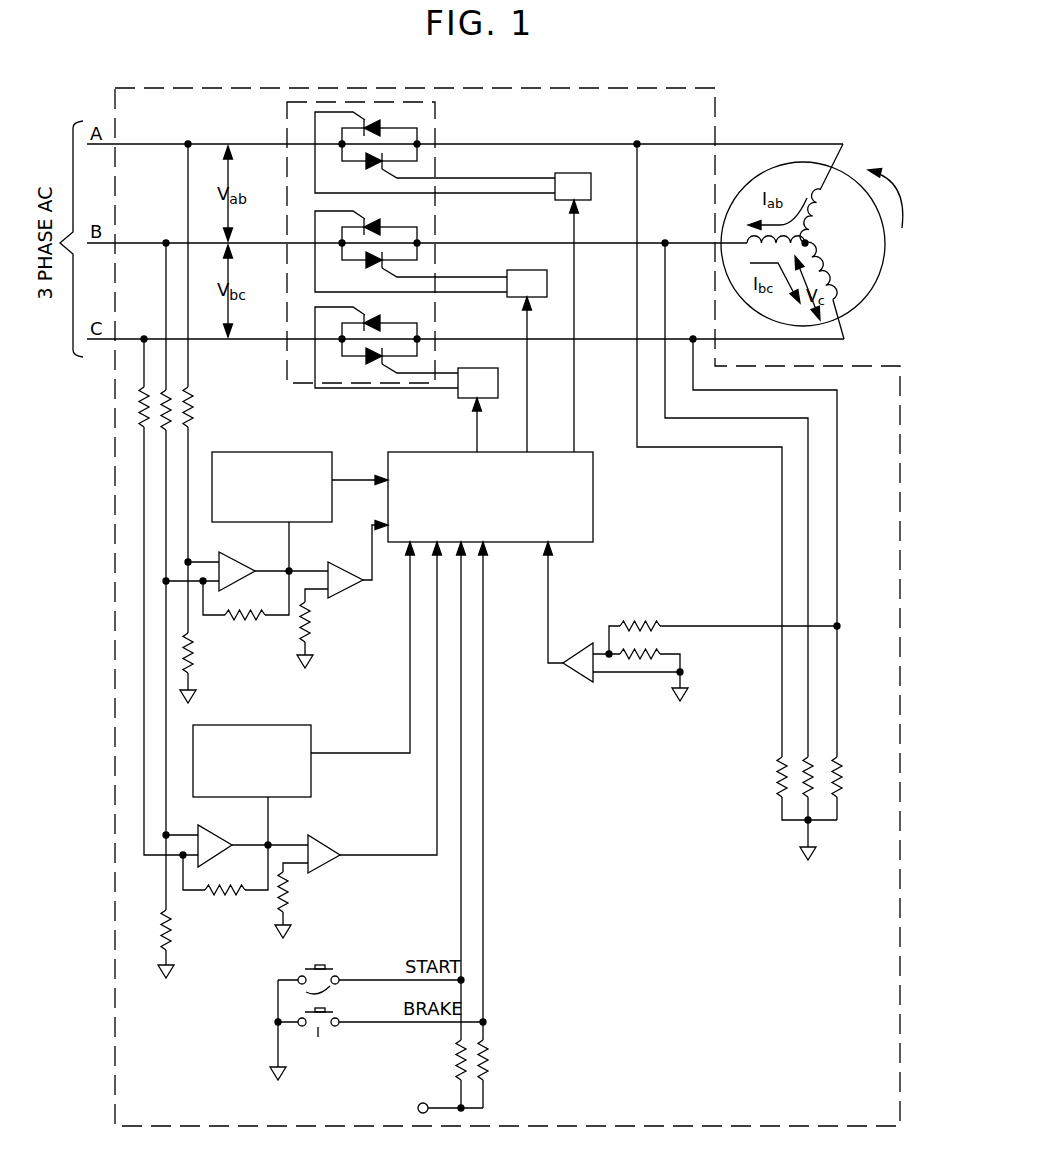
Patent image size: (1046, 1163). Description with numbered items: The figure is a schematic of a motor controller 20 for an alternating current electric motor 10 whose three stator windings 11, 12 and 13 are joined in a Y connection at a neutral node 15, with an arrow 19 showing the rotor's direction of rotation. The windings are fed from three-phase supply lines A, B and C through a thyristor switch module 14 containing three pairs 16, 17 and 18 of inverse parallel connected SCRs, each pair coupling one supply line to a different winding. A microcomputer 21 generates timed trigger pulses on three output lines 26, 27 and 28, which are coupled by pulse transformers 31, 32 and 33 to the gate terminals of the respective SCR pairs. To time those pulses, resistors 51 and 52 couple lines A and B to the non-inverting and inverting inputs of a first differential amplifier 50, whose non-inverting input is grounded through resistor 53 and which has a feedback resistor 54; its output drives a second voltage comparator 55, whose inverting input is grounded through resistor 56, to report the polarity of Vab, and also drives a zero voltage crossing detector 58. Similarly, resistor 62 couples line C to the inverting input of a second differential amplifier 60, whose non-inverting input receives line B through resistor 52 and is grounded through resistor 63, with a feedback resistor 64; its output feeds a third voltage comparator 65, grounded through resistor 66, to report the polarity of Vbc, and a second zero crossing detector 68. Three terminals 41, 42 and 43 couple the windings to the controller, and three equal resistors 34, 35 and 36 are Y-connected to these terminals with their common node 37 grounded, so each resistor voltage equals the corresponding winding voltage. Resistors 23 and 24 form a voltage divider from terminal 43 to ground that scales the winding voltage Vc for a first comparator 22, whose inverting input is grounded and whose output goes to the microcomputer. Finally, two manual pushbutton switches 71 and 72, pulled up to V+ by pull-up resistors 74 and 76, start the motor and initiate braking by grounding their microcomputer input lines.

The alternating current electric motor 10 is at (870, 311).
The motor stator winding 11 is at (818, 186).
The motor stator winding 12 is at (744, 240).
The motor stator winding 13 is at (831, 280).
The thyristor switch module 14 is at (420, 122).
The neutral node 15 is at (822, 235).
The pair of inverse parallel connected SCR's 16 is at (340, 135).
The pair of inverse parallel connected SCR's 17 is at (380, 250).
The pair of inverse parallel connected SCR's 18 is at (355, 347).
The arrow 19 is at (893, 190).
The motor controller 20 is at (108, 771).
The microcomputer 21 is at (400, 452).
The first voltage comparator 22 is at (583, 651).
The resistor 23 is at (662, 654).
The resistor 24 is at (640, 621).
The output line 26 is at (574, 437).
The trigger output line 27 is at (527, 437).
The trigger output line 28 is at (477, 437).
The pulse transformer 31 is at (565, 184).
The pulse transformer 32 is at (518, 279).
The pulse transformer 33 is at (471, 377).
The resistor 34 is at (780, 782).
The resistor 35 is at (814, 790).
The resistor 36 is at (841, 770).
The common node 37 is at (812, 825).
The terminal 41 is at (637, 138).
The terminal 42 is at (664, 240).
The terminal 43 is at (693, 336).
The first differential amplifier 50 is at (236, 558).
The resistor 51 is at (195, 400).
The resistor 52 is at (175, 428).
The resistor 53 is at (193, 668).
The feedback resistor 54 is at (235, 622).
The second voltage comparator 55 is at (343, 563).
The resistor 56 is at (312, 622).
The zero voltage crossing detector 58 is at (274, 452).
The second differential amplifier 60 is at (221, 839).
The resistor 62 is at (140, 405).
The resistor 63 is at (172, 935).
The feedback resistor 64 is at (214, 900).
The third voltage comparator 65 is at (330, 848).
The resistor 66 is at (291, 895).
The second zero crossing detector 68 is at (262, 725).
The manual pushbutton switch 71 is at (300, 990).
The manual pushbutton switch 72 is at (320, 1040).
The pull-up resistor 74 is at (455, 1058).
The pull-up resistor 76 is at (490, 1060).